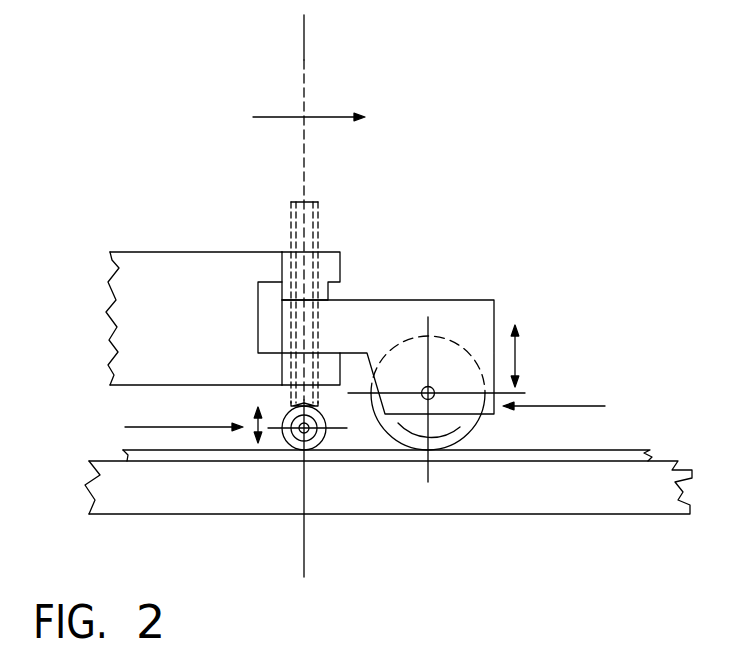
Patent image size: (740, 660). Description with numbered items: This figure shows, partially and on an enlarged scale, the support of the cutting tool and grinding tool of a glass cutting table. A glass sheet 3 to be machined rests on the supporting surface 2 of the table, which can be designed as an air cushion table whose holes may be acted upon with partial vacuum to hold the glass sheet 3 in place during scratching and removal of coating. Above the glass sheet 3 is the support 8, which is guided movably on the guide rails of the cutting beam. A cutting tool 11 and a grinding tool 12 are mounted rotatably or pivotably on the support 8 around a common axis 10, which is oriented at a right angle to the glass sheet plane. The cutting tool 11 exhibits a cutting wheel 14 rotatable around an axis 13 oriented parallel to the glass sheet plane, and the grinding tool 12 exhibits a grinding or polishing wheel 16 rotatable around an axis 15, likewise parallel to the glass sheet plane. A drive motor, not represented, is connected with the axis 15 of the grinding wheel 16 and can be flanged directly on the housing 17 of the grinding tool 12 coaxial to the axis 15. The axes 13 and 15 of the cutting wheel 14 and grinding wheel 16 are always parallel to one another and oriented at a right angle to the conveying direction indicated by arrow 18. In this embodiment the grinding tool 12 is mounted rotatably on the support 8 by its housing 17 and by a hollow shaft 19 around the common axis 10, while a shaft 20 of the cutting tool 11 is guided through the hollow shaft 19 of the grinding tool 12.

The supporting surface 2 is at (618, 497).
The glass sheet 3 is at (637, 452).
The support 8 is at (140, 309).
The common axis 10 is at (304, 38).
The cutting tool 11 is at (176, 425).
The grinding tool 12 is at (577, 407).
The axis 13 is at (302, 440).
The cutting wheel 14 is at (315, 442).
The axis 15 is at (424, 401).
The grinding wheel 16 is at (457, 428).
The housing 17 is at (442, 315).
The conveying direction 18 is at (328, 117).
The hollow shaft 19 is at (322, 292).
The shaft 20 is at (312, 208).